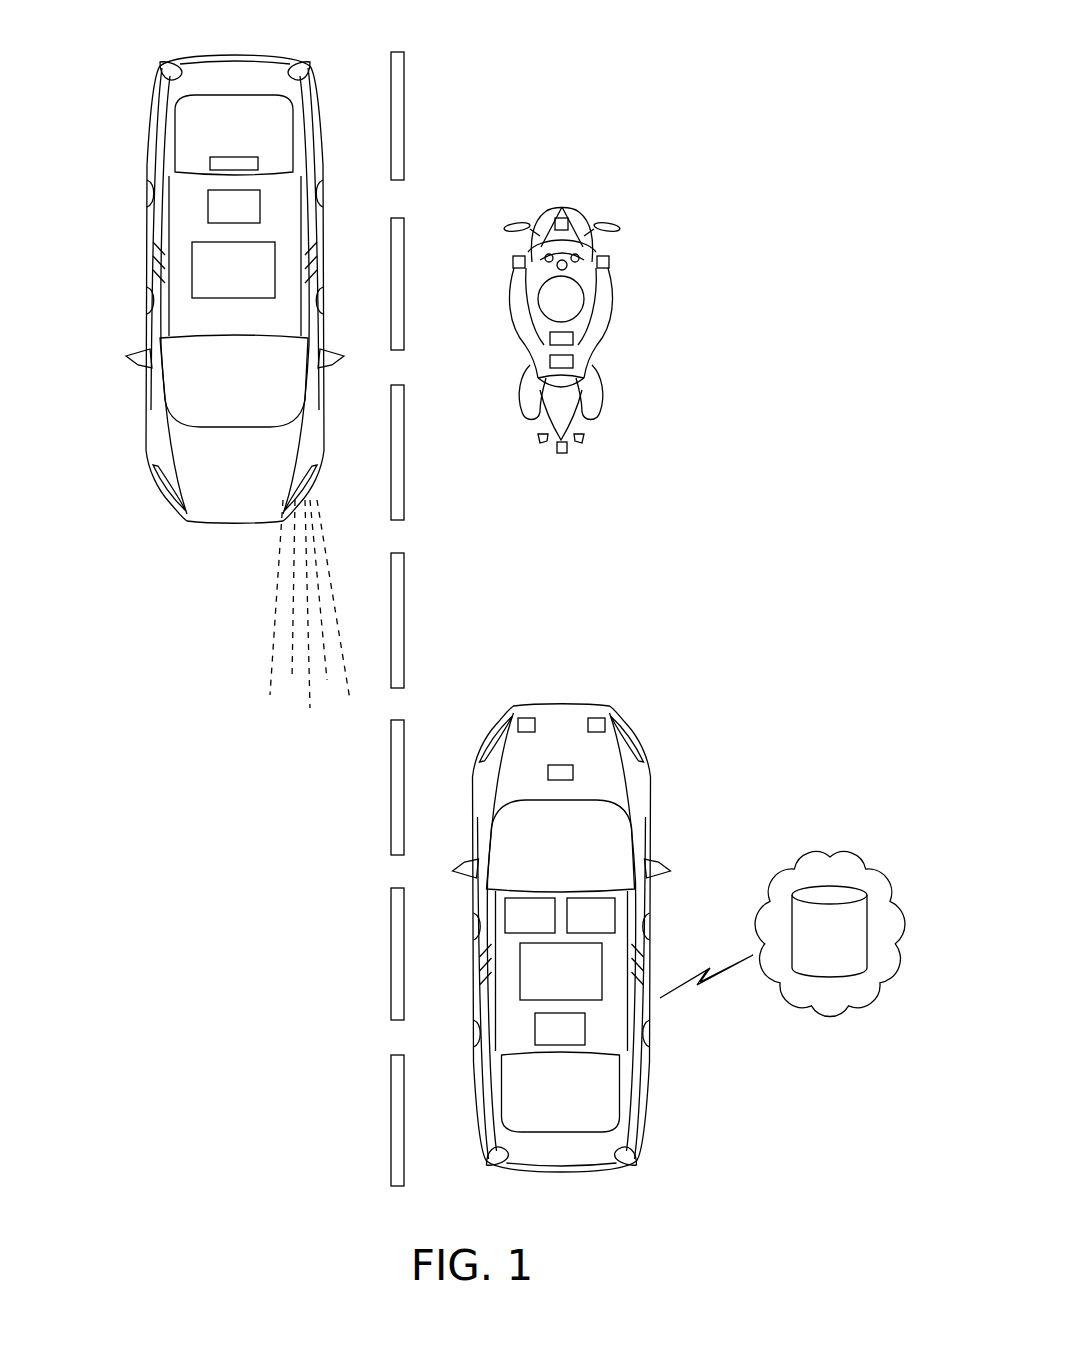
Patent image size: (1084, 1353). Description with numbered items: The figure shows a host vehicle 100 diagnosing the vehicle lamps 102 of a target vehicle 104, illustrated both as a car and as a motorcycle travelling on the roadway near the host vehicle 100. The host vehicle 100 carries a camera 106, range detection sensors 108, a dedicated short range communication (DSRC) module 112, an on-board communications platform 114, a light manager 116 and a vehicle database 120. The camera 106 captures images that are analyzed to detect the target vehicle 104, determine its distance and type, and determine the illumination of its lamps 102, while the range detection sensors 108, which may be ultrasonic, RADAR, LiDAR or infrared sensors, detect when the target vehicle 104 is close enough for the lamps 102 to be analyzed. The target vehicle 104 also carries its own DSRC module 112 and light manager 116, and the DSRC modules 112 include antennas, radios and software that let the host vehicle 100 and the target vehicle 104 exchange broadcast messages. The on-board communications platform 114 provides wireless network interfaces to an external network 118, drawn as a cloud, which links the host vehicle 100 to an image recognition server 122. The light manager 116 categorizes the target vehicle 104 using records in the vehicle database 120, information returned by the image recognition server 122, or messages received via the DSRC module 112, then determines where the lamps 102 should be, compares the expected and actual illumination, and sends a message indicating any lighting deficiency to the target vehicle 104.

The host vehicle 100 is at (656, 797).
The vehicle lamps 102 is at (172, 72).
The target vehicle 104 is at (318, 110).
The camera 106 is at (557, 765).
The range detection sensors 108 is at (526, 716).
The dedicated short range communication (DSRC) module 112 is at (275, 254).
The on-board communications platform 114 is at (560, 1029).
The light manager 116 is at (573, 362).
The external network 118 is at (820, 856).
The vehicle database 120 is at (591, 915).
The image recognition server 122 is at (826, 978).